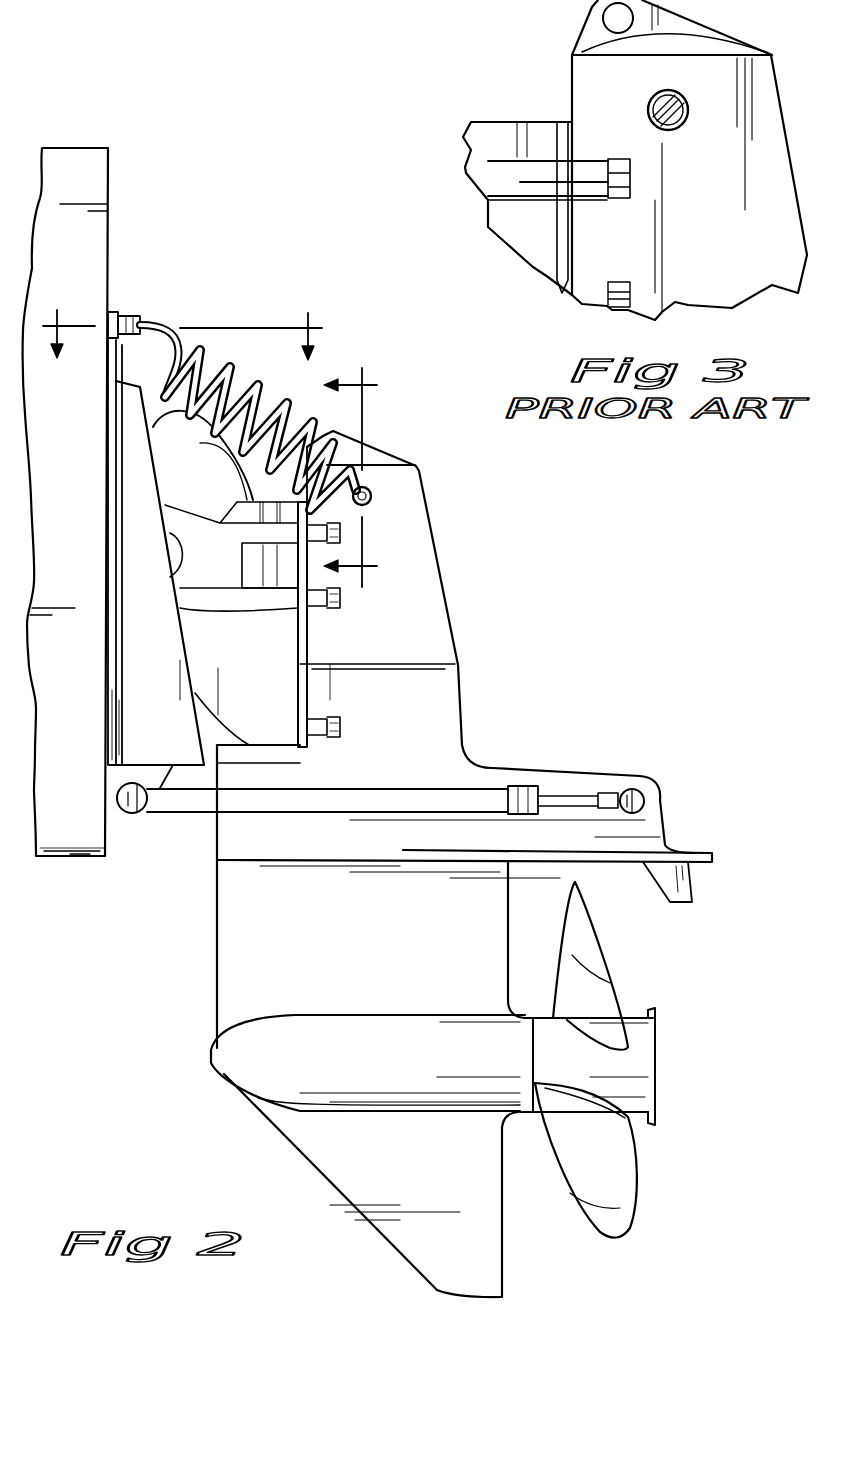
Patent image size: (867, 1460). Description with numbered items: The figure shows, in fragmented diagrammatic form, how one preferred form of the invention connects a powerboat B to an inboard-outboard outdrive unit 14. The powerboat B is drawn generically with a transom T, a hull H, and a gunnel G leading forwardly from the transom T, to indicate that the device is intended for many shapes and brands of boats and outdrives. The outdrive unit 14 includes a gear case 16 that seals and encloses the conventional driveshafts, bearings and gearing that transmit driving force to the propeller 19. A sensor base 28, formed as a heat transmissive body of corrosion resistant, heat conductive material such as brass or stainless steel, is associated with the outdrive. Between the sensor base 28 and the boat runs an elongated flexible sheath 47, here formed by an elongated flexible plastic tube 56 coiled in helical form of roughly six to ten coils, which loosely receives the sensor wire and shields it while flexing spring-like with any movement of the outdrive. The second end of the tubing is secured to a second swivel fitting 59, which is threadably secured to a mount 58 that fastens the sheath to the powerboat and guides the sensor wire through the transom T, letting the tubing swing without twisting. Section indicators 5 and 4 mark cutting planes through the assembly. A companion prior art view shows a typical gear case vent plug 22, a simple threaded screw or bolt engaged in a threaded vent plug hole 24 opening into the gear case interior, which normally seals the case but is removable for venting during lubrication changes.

In FIG. 2, the gunnel G is at (72, 147).
In FIG. 2, the transom T is at (107, 838).
In FIG. 2, the powerboat B is at (110, 228).
In FIG. 2, the hull H is at (61, 656).
In FIG. 2, the section line 5- 5 is at (57, 314).
In FIG. 2, the section line 4- 4 is at (362, 372).
In FIG. 2, the mount 58 is at (122, 300).
In FIG. 2, the second swivel fitting 59 is at (138, 308).
In FIG. 2, the elongated flexible plastic tube 56 is at (220, 445).
In FIG. 2, the elongated flexible sheath 47 is at (307, 393).
In FIG. 2, the sensor base 28 is at (384, 488).
In FIG. 2, the inboard-outboard outdrive unit 14 is at (466, 688).
In FIG. 2, the gear case 16 is at (415, 752).
In FIG. 2, the propeller 19 is at (603, 1168).
In FIG. 3, the gear case vent plug 22 is at (652, 93).
In FIG. 3, the vent plug hole 24 is at (690, 110).